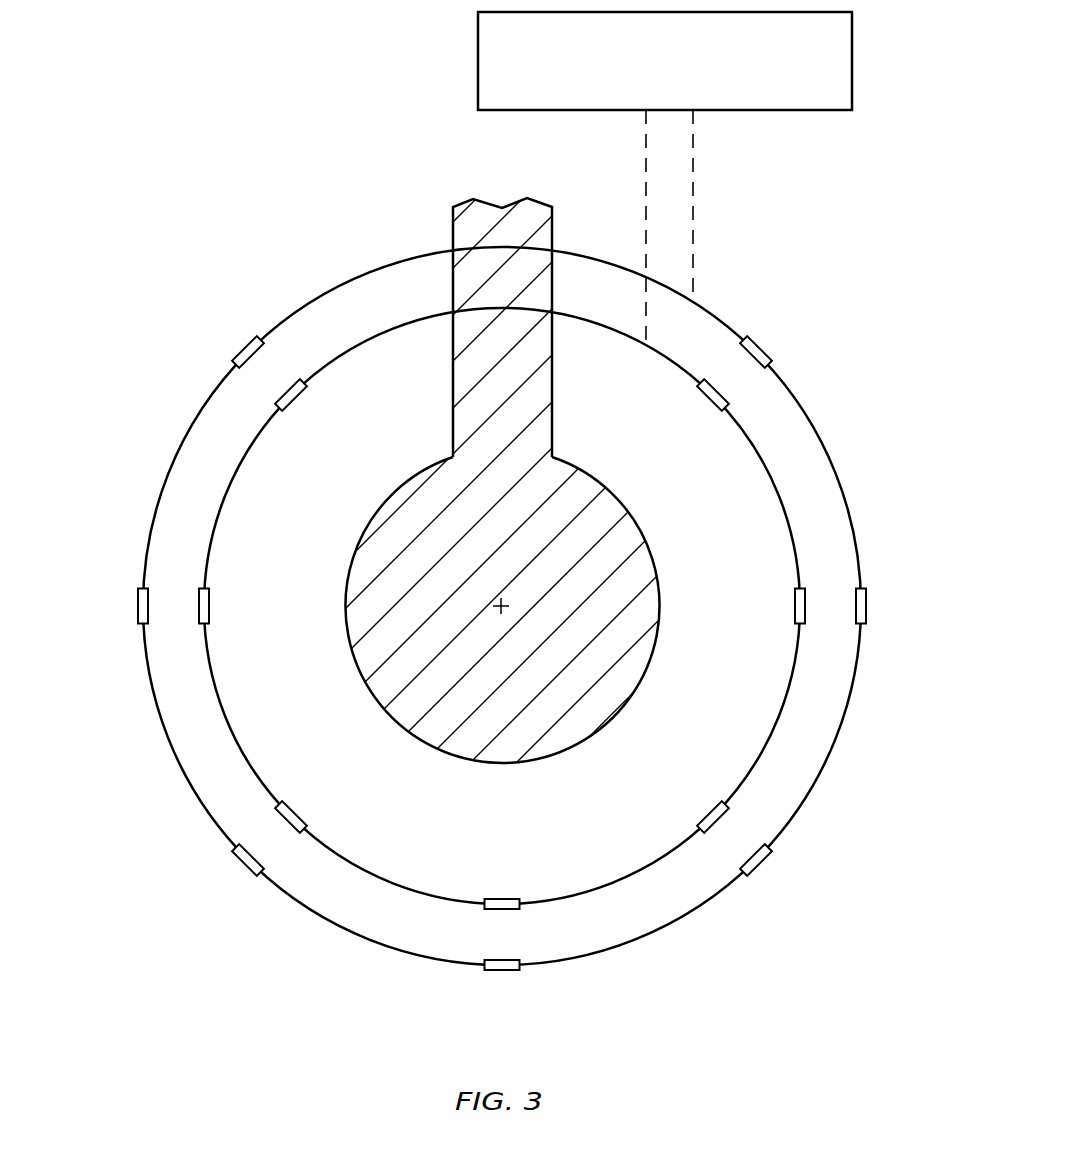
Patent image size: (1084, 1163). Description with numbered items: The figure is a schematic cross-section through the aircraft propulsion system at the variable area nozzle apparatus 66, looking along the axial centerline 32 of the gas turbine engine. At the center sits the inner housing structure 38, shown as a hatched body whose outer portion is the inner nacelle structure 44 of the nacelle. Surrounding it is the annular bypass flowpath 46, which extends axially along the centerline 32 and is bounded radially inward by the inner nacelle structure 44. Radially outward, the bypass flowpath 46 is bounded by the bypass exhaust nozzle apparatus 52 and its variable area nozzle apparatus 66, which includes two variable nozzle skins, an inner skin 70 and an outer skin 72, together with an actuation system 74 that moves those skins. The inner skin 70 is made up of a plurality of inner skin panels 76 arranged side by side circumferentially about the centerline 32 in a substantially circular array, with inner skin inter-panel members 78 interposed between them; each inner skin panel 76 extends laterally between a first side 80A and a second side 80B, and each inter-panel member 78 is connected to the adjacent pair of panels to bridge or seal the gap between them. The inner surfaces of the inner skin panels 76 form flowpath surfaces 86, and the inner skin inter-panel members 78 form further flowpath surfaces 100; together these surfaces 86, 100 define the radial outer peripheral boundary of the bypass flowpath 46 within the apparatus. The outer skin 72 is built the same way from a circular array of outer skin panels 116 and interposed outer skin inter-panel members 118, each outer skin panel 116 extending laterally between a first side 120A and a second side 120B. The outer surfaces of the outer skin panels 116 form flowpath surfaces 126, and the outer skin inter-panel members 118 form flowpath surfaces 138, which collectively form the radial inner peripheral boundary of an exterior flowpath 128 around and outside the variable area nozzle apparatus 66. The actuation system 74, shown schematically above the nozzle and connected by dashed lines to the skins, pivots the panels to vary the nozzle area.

The axial centerline 32 is at (507, 610).
The inner housing structure 38 is at (542, 500).
The inner nacelle structure 44 is at (595, 735).
The bypass flowpath 46 is at (291, 591).
The bypass exhaust nozzle apparatus 52 is at (513, 612).
The variable area nozzle apparatus 66 is at (514, 612).
The inner skin 70 is at (502, 606).
The outer skin 72 is at (514, 612).
The actuation system 74 is at (852, 50).
The inner skin panels 76 is at (502, 606).
The inner skin inter-panel members 78 is at (702, 402).
The first side 80A is at (523, 905).
The second side 80B is at (704, 830).
The flowpath surface 86 is at (786, 518).
The flowpath surface 100 is at (714, 408).
The outer skin panels 116 is at (514, 612).
The outer skin inter-panel members 118 is at (240, 348).
The first side 120A is at (520, 971).
The second side 120B is at (750, 870).
The flowpath surface 126 is at (550, 606).
The exterior flowpath 128 is at (909, 319).
The flowpath surface 138 is at (766, 858).